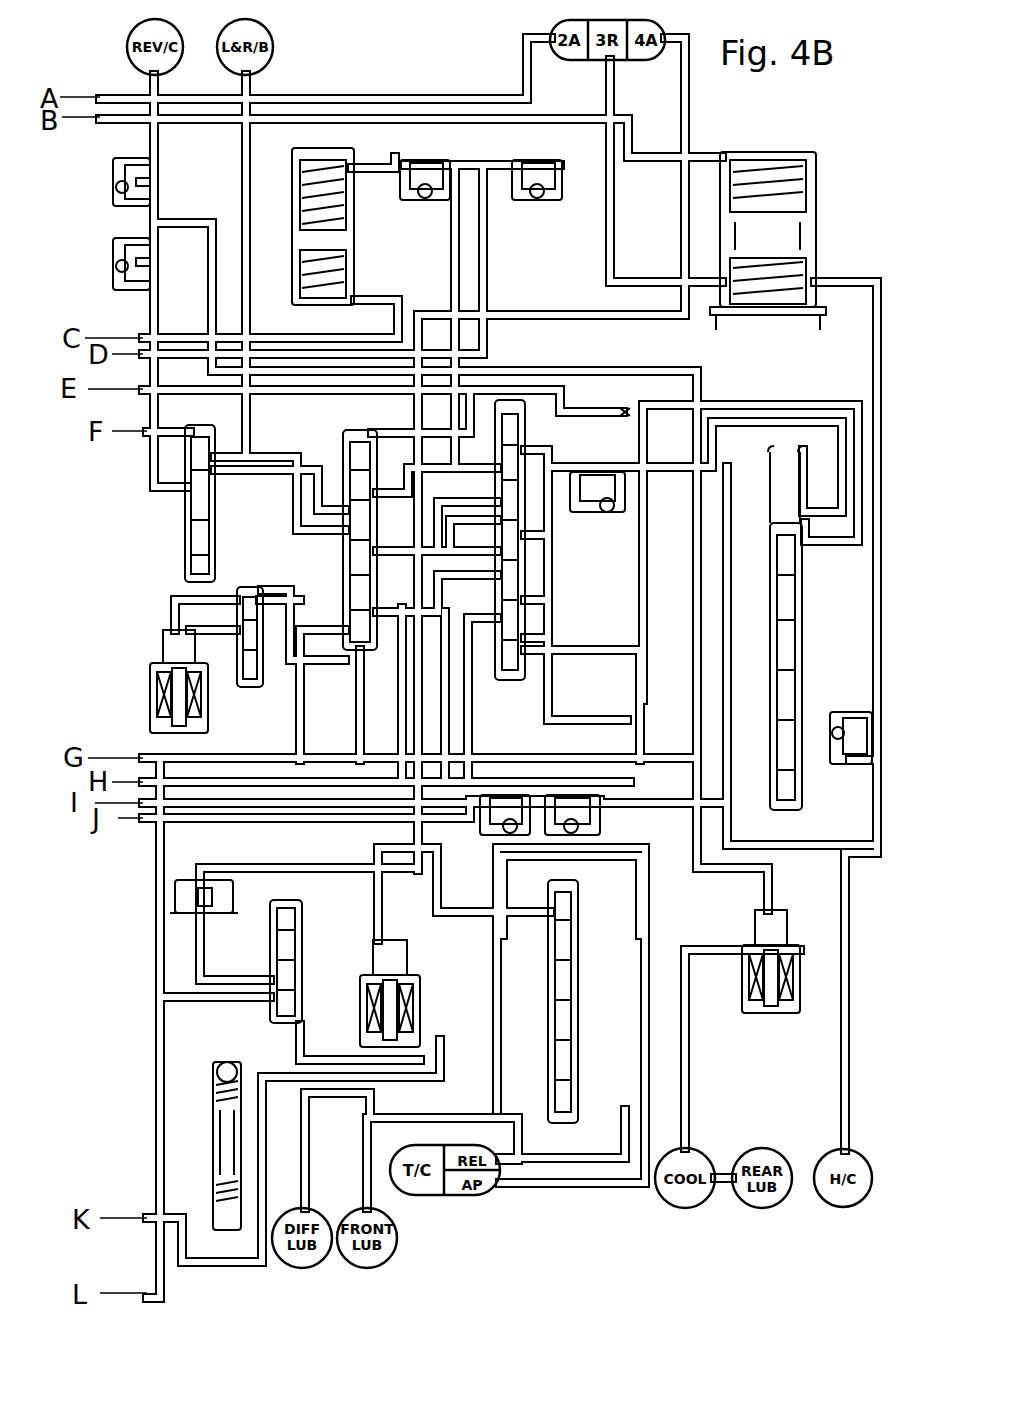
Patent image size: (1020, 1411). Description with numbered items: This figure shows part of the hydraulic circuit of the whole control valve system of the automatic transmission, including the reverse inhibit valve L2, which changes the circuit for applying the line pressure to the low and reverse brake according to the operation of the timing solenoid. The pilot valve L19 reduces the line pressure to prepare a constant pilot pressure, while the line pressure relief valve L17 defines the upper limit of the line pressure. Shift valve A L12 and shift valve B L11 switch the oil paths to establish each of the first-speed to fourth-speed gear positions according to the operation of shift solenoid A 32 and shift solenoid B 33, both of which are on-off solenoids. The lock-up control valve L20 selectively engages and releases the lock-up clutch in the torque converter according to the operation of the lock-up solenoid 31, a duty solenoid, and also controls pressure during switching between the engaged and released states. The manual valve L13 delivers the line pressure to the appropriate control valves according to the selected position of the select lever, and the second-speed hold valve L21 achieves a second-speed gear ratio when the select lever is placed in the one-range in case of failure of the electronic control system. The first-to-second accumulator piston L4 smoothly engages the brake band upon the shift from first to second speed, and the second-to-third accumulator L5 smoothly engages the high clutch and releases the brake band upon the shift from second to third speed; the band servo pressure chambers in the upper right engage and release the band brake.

The reverse inhibit valve L2 is at (200, 514).
The 1–2 accumulator piston L4 is at (323, 237).
The 2–3 accumulator L5 is at (768, 254).
The shift valve B L11 is at (362, 553).
The shift valve A L12 is at (511, 556).
The manual valve L13 is at (787, 641).
The line pressure relief valve L17 is at (229, 1155).
The pilot valve L19 is at (289, 975).
The lock-up control valve L20 is at (564, 1014).
The 2nd-speed hold valve L21 is at (252, 651).
The lock-up solenoid 31 is at (360, 1010).
The shift solenoid A 32 is at (750, 1013).
The shift solenoid B 33 is at (150, 694).